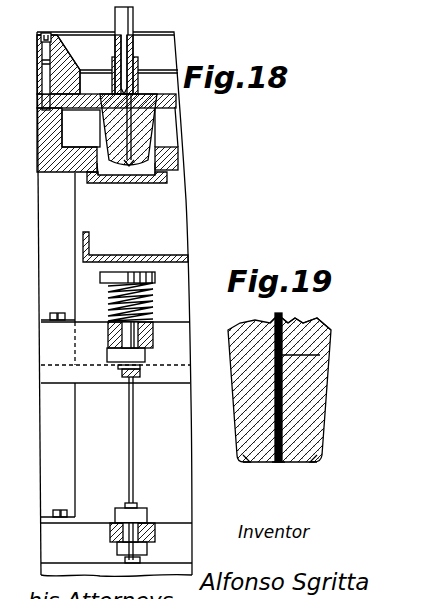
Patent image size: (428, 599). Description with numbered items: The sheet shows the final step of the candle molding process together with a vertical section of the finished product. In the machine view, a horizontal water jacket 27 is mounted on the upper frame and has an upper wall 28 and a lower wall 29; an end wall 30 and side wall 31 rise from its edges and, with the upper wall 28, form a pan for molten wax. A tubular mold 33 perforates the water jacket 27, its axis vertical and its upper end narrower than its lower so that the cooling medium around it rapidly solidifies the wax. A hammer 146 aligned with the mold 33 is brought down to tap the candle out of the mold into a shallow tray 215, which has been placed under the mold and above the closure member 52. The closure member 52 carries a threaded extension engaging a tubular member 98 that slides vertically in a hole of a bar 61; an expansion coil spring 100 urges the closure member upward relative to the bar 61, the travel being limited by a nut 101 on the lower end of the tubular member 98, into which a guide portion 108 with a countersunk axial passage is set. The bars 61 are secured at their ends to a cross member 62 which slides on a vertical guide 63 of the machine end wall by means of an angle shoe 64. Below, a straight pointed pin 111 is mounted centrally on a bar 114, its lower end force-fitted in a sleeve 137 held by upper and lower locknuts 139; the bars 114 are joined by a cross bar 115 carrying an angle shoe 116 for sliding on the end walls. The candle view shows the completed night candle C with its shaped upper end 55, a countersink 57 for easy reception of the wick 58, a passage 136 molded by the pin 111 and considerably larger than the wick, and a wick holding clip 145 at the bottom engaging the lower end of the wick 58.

In FIG. 18, the end wall 30 is at (87, 47).
In FIG. 18, the hammer 146 is at (133, 26).
In FIG. 18, the side wall 31 is at (62, 78).
In FIG. 18, the upper wall 28 is at (40, 105).
In FIG. 18, the water jacket 27 is at (42, 133).
In FIG. 18, the mold 33 is at (92, 125).
In FIG. 18, the lower wall 29 is at (78, 160).
In FIG. 18, the vertical guide 63 is at (52, 222).
In FIG. 18, the tray 215 is at (160, 250).
In FIG. 18, the closure member 52 is at (157, 278).
In FIG. 18, the expansion coil spring 100 is at (108, 303).
In FIG. 18, the angle shoe 64 is at (48, 320).
In FIG. 18, the tubular member 98 is at (137, 338).
In FIG. 18, the bar 61 is at (115, 339).
In FIG. 18, the cross member 62 is at (52, 352).
In FIG. 18, the nut 101 is at (120, 365).
In FIG. 18, the guide portion 108 is at (133, 373).
In FIG. 18, the pin 111 is at (133, 478).
In FIG. 18, the angle shoe 116 is at (50, 515).
In FIG. 18, the locknut 139 is at (142, 515).
In FIG. 18, the sleeve 137 is at (108, 522).
In FIG. 18, the bar 114 is at (120, 540).
In FIG. 18, the cross bar 115 is at (52, 545).
In FIG. 19, the night candle C is at (310, 390).
In FIG. 19, the wick 58 is at (278, 312).
In FIG. 19, the countersink 57 is at (284, 320).
In FIG. 19, the upper end 55 is at (318, 321).
In FIG. 19, the passage 136 is at (320, 355).
In FIG. 19, the wick holding clip 145 is at (264, 462).